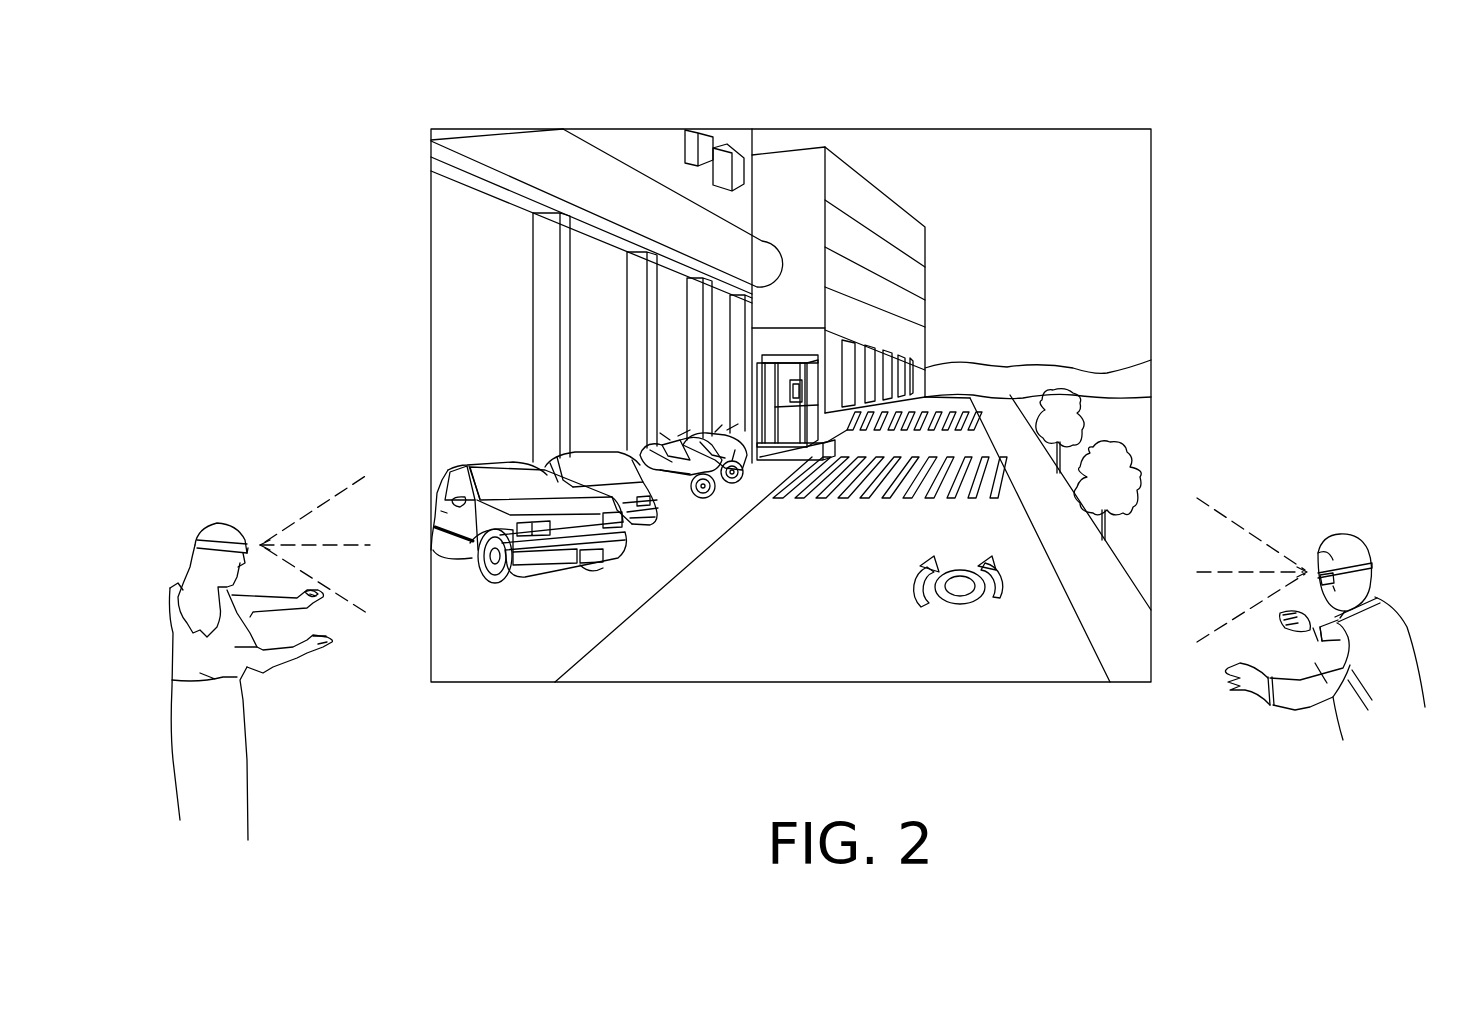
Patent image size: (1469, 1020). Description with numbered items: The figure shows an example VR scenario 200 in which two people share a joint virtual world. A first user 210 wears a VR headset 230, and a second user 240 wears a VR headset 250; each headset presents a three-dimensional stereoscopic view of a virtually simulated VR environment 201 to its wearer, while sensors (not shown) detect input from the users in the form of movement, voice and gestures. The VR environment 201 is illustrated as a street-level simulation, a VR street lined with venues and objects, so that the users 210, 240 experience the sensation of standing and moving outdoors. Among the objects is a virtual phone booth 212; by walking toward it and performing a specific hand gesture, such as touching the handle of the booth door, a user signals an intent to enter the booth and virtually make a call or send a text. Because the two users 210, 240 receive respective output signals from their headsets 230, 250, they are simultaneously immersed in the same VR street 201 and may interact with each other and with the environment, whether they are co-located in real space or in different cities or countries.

The VR scenario 200 is at (1233, 106).
The VR environment 201 is at (993, 128).
The first user 210 is at (1400, 617).
The virtual phone booth 212 is at (817, 390).
The VR headset 230 is at (1318, 573).
The second user 240 is at (170, 588).
The VR headset 250 is at (248, 543).